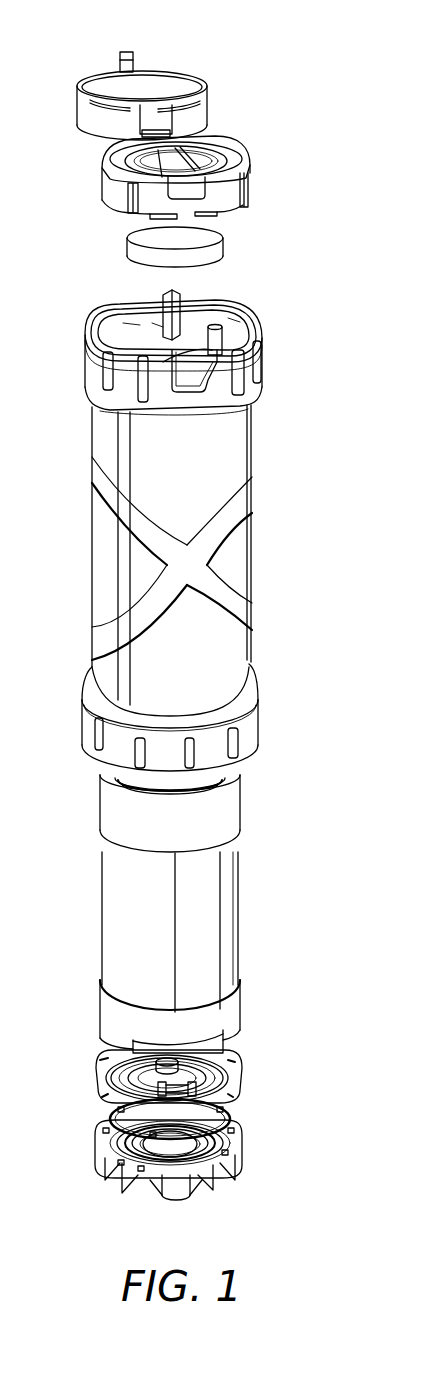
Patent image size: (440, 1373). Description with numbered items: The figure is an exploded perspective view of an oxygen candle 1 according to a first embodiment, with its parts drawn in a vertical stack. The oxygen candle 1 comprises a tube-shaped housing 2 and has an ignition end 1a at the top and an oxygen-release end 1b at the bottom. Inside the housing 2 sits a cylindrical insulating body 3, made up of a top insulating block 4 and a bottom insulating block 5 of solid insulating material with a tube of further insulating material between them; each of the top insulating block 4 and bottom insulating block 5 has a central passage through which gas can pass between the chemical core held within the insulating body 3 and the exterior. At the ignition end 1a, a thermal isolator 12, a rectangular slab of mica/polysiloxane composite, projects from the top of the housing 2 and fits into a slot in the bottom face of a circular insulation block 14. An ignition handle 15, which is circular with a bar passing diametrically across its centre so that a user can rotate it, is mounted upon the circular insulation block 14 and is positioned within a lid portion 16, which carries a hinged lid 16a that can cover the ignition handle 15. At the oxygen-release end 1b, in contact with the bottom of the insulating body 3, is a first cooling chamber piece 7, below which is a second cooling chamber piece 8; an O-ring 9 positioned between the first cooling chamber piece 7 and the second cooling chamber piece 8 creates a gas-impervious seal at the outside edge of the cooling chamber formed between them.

The oxygen candle 1 is at (283, 53).
The ignition end 1a is at (177, 64).
The oxygen-release end 1b is at (197, 1199).
The tube-shaped housing 2 is at (92, 552).
The cylindrical insulating body 3 is at (101, 906).
The top insulating block 4 is at (242, 797).
The bottom insulating block 5 is at (240, 1010).
The first cooling chamber piece 7 is at (240, 1060).
The second cooling chamber piece 8 is at (97, 1120).
The O-ring 9 is at (228, 1108).
The thermal isolator 12 is at (163, 300).
The circular insulation block 14 is at (225, 248).
The ignition handle 15 is at (137, 160).
The lid portion 16 is at (250, 180).
The hinged lid 16a is at (208, 107).